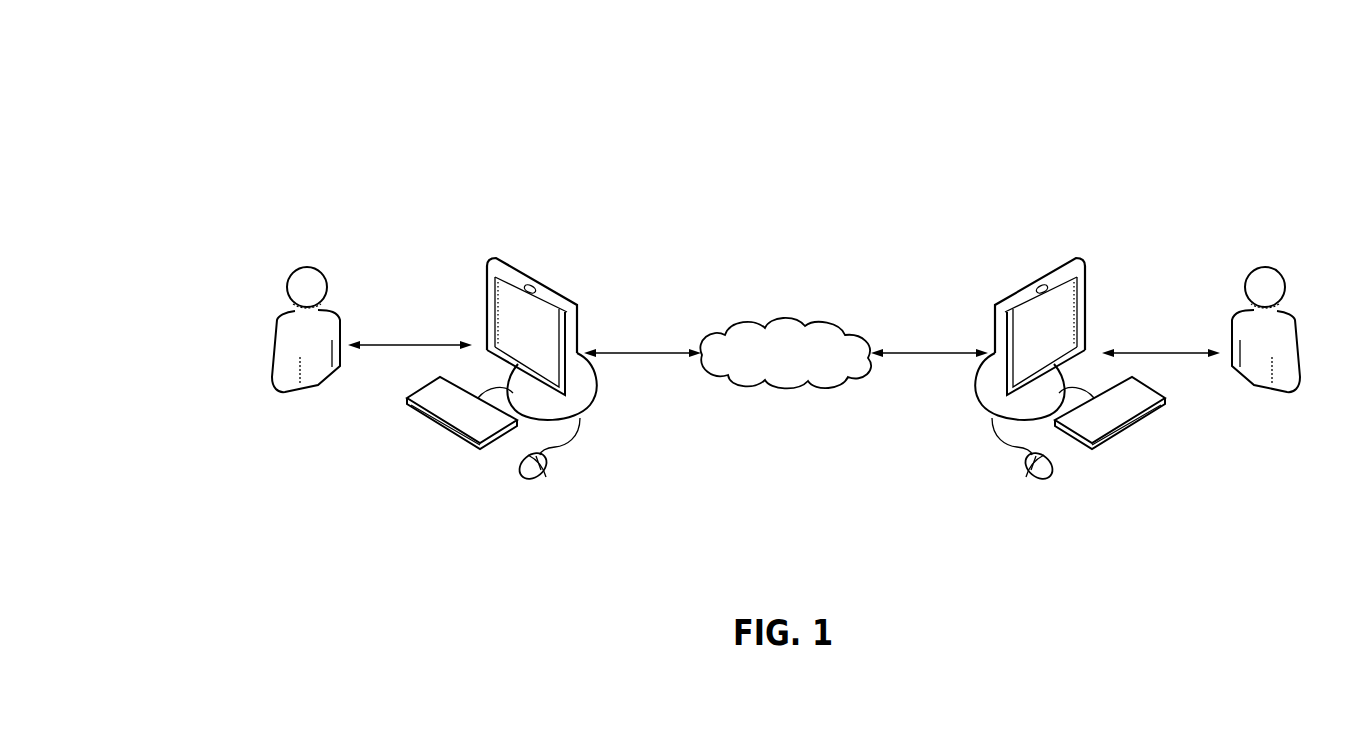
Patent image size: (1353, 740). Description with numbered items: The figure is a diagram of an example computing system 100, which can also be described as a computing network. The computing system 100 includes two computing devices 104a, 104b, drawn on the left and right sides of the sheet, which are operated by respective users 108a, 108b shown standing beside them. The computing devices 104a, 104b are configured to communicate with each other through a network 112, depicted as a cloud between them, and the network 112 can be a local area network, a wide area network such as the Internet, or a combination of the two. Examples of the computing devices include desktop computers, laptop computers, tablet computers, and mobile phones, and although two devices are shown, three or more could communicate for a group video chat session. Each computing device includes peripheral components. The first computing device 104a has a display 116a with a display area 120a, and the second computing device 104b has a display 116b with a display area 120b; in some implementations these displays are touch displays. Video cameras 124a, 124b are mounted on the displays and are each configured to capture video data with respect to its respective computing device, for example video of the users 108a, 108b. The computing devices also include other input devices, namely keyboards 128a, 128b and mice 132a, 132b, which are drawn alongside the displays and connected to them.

The computing system 100 is at (318, 73).
The computing device 104a is at (621, 423).
The computing device 104b is at (1045, 371).
The user 108a is at (305, 266).
The user 108b is at (1267, 266).
The network 112 is at (787, 321).
The display 116a is at (486, 275).
The display 116b is at (1086, 275).
The display area 120a is at (562, 327).
The display area 120b is at (1010, 327).
The video camera 124a is at (531, 287).
The video camera 124b is at (1041, 287).
The keyboard 128a is at (438, 420).
The keyboard 128b is at (1134, 420).
The mouse 132a is at (543, 475).
The mouse 132b is at (1029, 475).